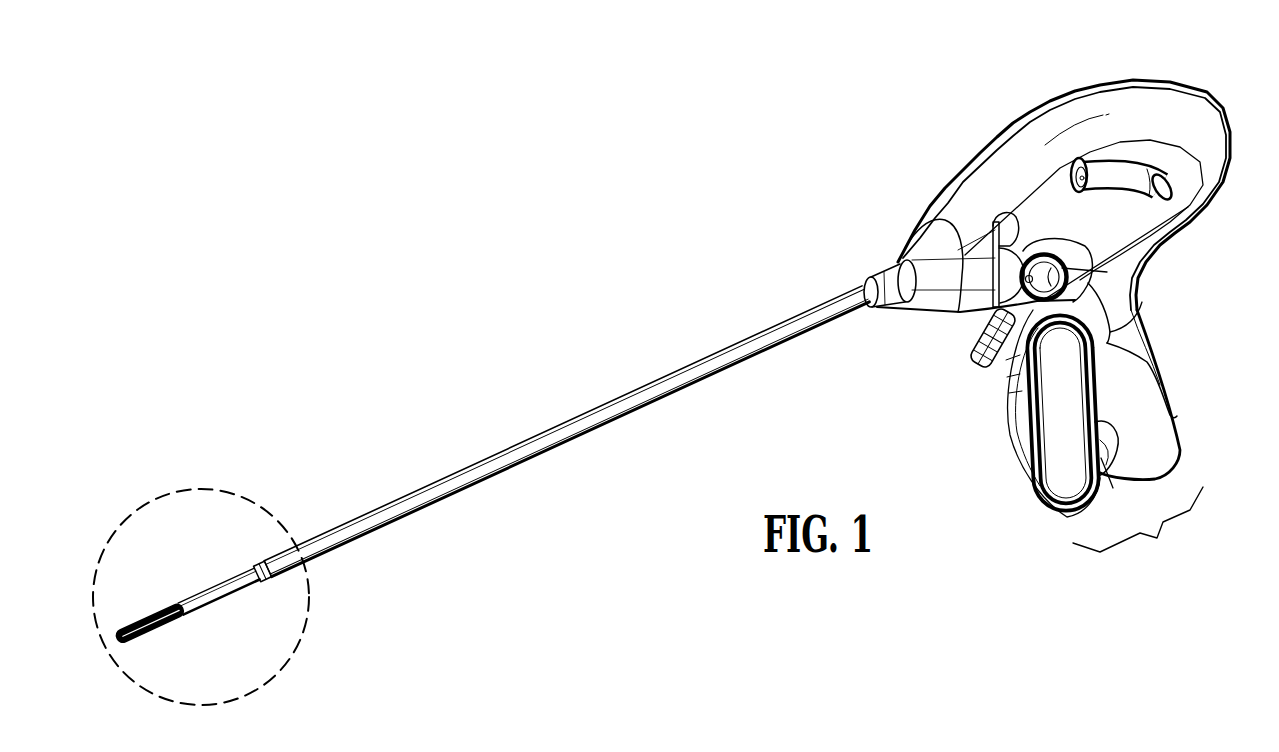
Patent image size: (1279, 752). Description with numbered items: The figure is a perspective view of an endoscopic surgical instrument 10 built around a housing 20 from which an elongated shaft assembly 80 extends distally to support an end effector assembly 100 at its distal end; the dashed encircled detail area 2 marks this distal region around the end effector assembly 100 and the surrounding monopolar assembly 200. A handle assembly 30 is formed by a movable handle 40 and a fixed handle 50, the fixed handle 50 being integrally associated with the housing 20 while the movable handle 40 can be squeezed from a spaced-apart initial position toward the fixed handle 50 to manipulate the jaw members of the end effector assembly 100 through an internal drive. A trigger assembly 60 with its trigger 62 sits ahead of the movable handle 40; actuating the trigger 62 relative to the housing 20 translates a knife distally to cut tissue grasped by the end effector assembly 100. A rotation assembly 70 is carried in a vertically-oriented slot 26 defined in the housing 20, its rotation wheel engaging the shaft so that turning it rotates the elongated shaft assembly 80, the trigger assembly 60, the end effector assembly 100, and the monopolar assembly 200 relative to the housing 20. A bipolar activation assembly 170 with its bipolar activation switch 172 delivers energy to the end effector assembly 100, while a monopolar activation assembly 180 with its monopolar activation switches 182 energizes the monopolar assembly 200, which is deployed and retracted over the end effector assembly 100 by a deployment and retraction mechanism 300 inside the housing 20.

The instrument 10 is at (594, 340).
The detail area of FIG. 2 is at (198, 489).
The housing 20 is at (1193, 100).
The slot 26 is at (905, 256).
The handle assembly 30 is at (1138, 526).
The movable handle 40 is at (1038, 484).
The fixed handle 50 is at (1158, 428).
The trigger assembly 60 is at (984, 376).
The trigger 62 is at (973, 342).
The rotation assembly 70 is at (993, 220).
The elongated shaft assembly 80 is at (765, 364).
The end effector assembly 100 is at (118, 650).
The bipolar activation assembly 170 is at (1130, 447).
The bipolar activation switch 172 is at (1108, 452).
The monopolar activation assembly 180 is at (1043, 230).
The monopolar activation switches 182 is at (1107, 272).
The monopolar assembly 200 is at (216, 608).
The deployment and retraction mechanism 300 is at (1142, 205).